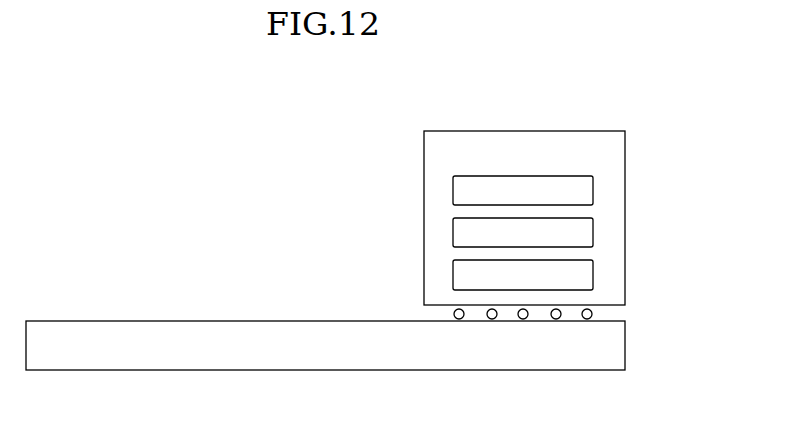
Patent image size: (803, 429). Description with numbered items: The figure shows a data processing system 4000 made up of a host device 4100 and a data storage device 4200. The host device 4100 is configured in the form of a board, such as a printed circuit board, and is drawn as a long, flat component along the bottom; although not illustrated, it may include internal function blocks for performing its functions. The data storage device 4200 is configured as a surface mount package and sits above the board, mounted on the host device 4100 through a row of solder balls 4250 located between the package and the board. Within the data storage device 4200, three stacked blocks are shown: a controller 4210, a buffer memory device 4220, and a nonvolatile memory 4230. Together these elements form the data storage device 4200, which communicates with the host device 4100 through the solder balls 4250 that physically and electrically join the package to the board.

The data processing system 4000 is at (105, 104).
The host device 4100 is at (325, 345).
The data storage device 4200 is at (524, 218).
The controller 4210 is at (523, 190).
The buffer memory device 4220 is at (523, 232).
The nonvolatile memory 4230 is at (523, 275).
The solder balls 4250 is at (606, 313).